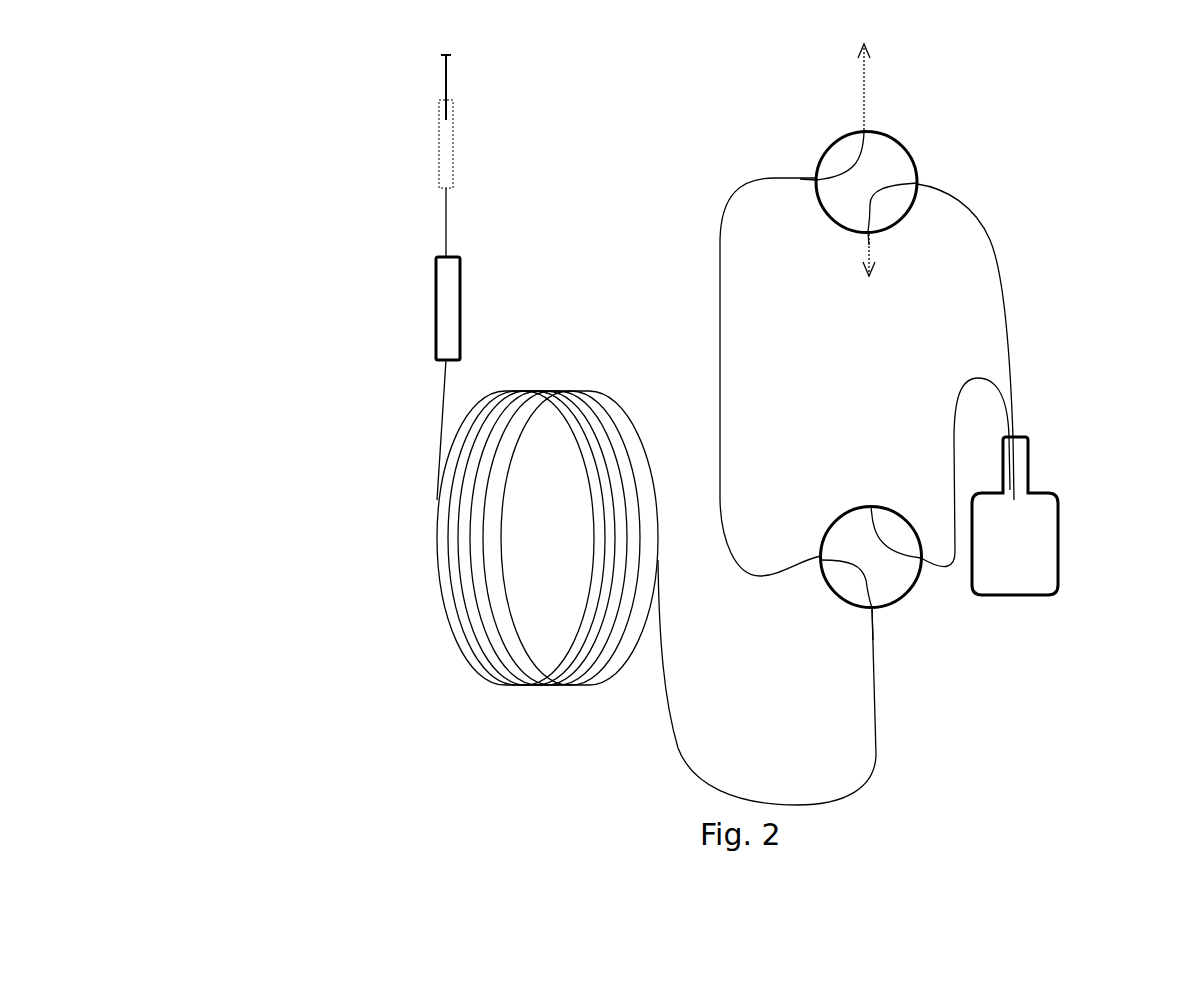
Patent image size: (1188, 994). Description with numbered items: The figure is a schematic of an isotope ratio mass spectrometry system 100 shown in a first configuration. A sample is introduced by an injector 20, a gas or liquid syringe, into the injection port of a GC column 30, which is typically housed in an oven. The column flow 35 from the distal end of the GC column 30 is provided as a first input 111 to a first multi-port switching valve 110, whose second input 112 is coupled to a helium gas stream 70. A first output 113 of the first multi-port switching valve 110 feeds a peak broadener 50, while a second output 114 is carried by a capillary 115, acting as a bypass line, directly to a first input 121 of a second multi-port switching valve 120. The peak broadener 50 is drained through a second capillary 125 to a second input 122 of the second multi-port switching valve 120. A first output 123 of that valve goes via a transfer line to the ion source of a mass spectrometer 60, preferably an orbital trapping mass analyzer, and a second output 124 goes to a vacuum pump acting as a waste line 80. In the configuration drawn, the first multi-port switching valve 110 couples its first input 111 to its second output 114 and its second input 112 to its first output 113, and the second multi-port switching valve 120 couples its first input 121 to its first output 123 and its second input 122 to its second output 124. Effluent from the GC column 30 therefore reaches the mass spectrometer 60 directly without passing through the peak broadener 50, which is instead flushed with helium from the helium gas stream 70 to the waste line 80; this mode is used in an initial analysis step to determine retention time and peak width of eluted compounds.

The IRMS system 100 is at (318, 200).
The injector 20 is at (422, 304).
The GC column 30 is at (432, 602).
The column flow 35 is at (798, 790).
The peak broadener 50 is at (1068, 520).
The mass spectrometer 60 is at (868, 72).
The helium gas stream 70 is at (871, 505).
The waste line 80 is at (871, 275).
The first multi-port switching valve 110 is at (881, 611).
The first input 111 is at (862, 611).
The second input 112 is at (884, 505).
The first output 113 is at (925, 570).
The second output 114 is at (812, 552).
The capillary 115 is at (708, 277).
The second multi-port switching valve 120 is at (905, 133).
The first input 121 is at (814, 173).
The second input 122 is at (925, 183).
The first output 123 is at (829, 141).
The second output 124 is at (880, 237).
The second capillary 125 is at (1026, 374).